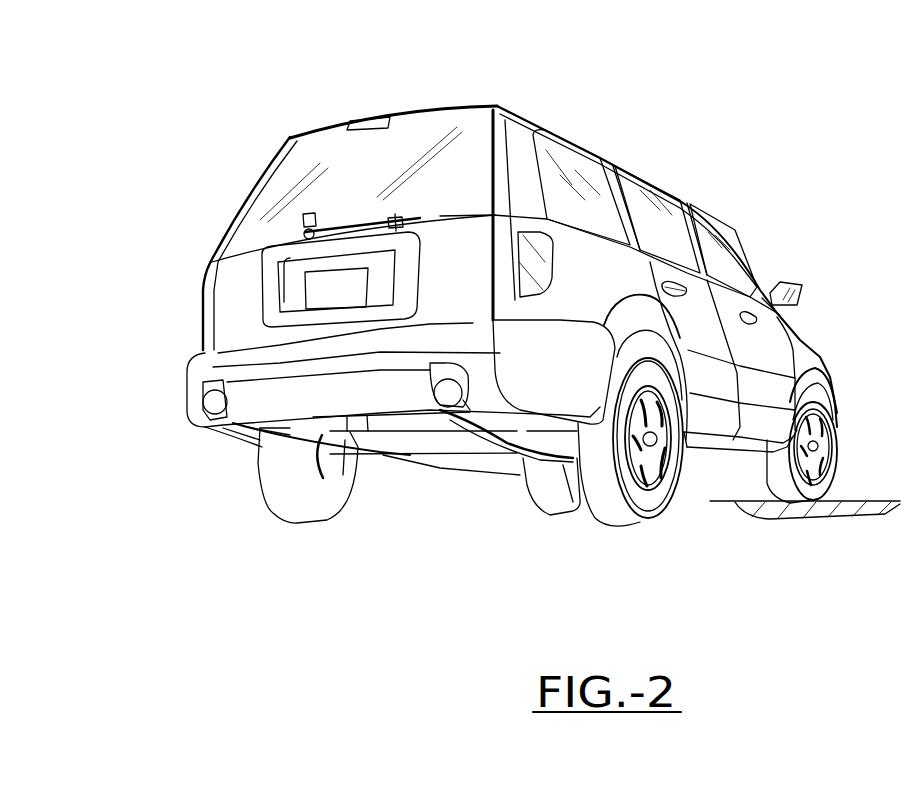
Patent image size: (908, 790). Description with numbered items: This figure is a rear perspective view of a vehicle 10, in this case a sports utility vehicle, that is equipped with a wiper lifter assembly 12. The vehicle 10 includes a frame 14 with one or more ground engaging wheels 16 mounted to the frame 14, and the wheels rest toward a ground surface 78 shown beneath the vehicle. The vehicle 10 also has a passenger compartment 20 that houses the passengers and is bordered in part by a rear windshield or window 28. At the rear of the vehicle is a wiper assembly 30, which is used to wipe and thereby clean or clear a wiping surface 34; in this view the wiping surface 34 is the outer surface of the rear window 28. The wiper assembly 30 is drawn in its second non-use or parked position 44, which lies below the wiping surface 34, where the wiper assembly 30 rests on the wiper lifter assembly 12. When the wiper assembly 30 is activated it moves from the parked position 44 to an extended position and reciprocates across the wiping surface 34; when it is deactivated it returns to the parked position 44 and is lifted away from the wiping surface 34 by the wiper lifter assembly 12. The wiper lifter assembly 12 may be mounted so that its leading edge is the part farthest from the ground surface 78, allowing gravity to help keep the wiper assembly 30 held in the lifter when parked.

The vehicle 10 is at (813, 223).
The wiper lifter assembly 12 is at (378, 228).
The frame 14 is at (693, 463).
The ground engaging wheels 16 is at (620, 513).
The passenger compartment 20 is at (650, 140).
The rear windshield or window 28 is at (299, 145).
The wiper assembly 30 is at (343, 225).
The wiping surface 34 is at (463, 143).
The parked position 44 is at (202, 238).
The ground surface 78 is at (823, 522).